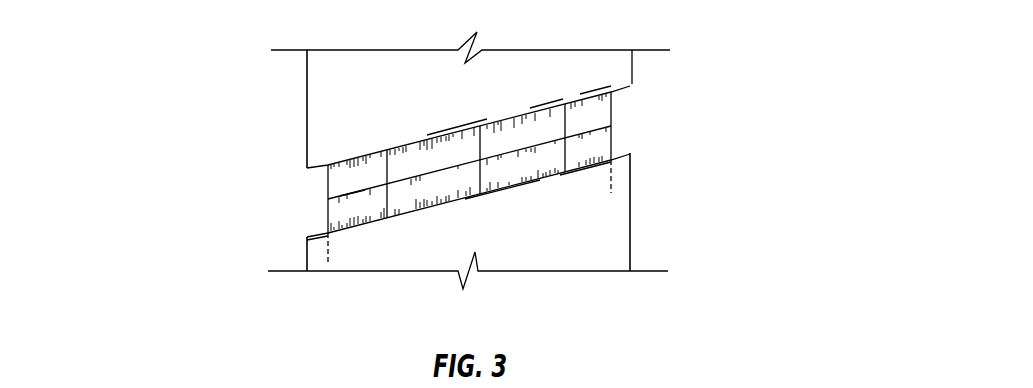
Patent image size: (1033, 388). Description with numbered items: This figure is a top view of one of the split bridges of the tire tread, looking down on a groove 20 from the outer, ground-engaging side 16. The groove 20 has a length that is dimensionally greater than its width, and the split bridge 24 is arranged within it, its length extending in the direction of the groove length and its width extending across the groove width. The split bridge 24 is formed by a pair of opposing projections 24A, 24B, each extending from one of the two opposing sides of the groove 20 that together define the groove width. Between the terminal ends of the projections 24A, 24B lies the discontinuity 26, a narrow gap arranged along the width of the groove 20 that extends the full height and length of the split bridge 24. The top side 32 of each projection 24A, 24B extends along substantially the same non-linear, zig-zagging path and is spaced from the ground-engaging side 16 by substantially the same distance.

The outer, ground-engaging side 16 is at (325, 90).
The groove 20 is at (628, 150).
The split bridge 24 is at (303, 206).
The first projection 24A is at (612, 107).
The second projection 24B is at (612, 142).
The discontinuity 26 is at (352, 192).
The top side 32 is at (557, 115).